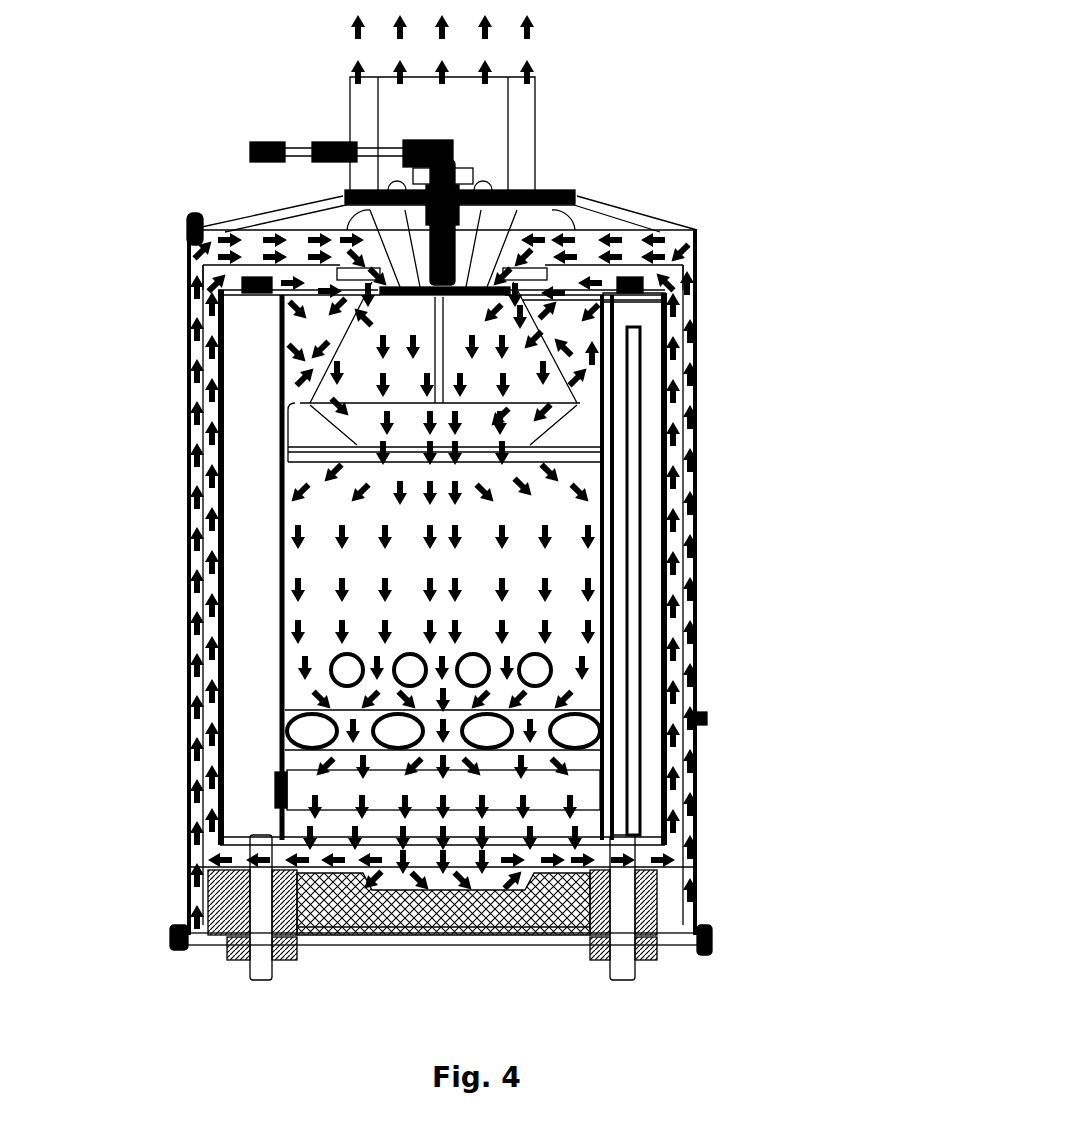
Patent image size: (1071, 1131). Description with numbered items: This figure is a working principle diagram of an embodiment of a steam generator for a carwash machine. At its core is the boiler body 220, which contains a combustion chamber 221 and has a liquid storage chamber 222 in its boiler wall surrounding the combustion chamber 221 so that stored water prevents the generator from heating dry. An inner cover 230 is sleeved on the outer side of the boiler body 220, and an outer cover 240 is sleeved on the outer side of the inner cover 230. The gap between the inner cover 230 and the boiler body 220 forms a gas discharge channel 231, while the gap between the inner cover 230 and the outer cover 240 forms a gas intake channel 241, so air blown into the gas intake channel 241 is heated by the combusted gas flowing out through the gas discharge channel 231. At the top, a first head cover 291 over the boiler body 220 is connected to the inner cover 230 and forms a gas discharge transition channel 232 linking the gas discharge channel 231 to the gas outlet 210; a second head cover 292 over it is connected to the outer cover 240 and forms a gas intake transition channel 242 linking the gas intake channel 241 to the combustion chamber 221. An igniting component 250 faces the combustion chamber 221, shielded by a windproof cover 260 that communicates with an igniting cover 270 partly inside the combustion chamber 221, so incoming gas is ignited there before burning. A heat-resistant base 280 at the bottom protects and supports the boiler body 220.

The gas outlet 210 is at (528, 127).
The second head cover 292 is at (585, 238).
The gas intake transition channel 242 is at (607, 262).
The gas discharge transition channel 232 is at (612, 282).
The first head cover 291 is at (697, 232).
The igniting component 250 is at (435, 242).
The windproof cover 260 is at (320, 218).
The igniting cover 270 is at (320, 365).
The boiler body 220 is at (683, 352).
The combustion chamber 221 is at (595, 497).
The liquid storage chamber 222 is at (650, 548).
The inner cover 230 is at (680, 630).
The gas discharge channel 231 is at (675, 681).
The outer cover 240 is at (697, 769).
The gas intake channel 241 is at (697, 806).
The heat-resistant base 280 is at (445, 935).